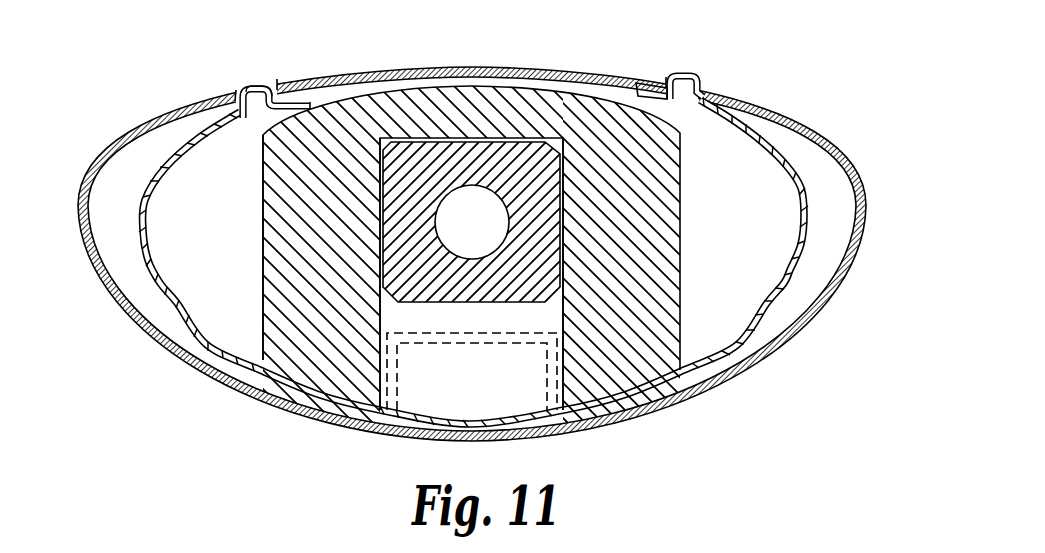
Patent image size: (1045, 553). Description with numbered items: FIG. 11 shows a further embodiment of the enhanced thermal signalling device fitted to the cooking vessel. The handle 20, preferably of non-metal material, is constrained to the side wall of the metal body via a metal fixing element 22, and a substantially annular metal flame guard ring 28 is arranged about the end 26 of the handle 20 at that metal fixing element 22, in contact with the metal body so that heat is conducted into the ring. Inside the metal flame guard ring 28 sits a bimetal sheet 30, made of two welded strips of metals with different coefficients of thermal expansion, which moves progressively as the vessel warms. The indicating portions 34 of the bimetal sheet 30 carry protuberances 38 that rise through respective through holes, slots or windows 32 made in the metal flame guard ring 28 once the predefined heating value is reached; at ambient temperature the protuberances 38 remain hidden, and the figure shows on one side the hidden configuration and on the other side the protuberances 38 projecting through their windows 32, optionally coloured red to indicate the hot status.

The handle 20 is at (263, 305).
The metal fixing element 22 is at (399, 219).
The end of the handle 26 is at (641, 222).
The metal flame guard ring 28 is at (858, 156).
The bimetal sheet 30 is at (141, 205).
The through holes, slots or windows 32 is at (267, 88).
The indicating portion 34 is at (657, 84).
The protuberances 38 is at (246, 86).